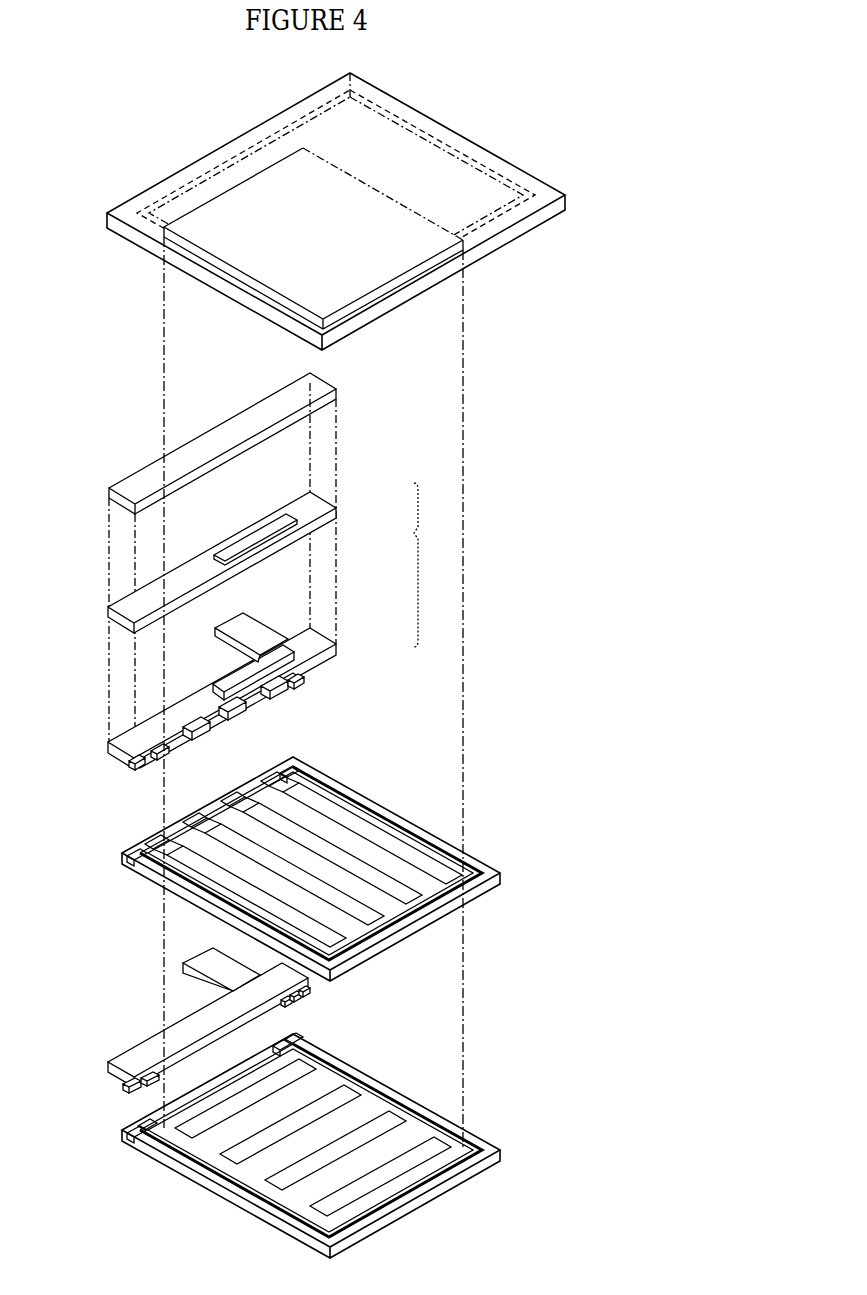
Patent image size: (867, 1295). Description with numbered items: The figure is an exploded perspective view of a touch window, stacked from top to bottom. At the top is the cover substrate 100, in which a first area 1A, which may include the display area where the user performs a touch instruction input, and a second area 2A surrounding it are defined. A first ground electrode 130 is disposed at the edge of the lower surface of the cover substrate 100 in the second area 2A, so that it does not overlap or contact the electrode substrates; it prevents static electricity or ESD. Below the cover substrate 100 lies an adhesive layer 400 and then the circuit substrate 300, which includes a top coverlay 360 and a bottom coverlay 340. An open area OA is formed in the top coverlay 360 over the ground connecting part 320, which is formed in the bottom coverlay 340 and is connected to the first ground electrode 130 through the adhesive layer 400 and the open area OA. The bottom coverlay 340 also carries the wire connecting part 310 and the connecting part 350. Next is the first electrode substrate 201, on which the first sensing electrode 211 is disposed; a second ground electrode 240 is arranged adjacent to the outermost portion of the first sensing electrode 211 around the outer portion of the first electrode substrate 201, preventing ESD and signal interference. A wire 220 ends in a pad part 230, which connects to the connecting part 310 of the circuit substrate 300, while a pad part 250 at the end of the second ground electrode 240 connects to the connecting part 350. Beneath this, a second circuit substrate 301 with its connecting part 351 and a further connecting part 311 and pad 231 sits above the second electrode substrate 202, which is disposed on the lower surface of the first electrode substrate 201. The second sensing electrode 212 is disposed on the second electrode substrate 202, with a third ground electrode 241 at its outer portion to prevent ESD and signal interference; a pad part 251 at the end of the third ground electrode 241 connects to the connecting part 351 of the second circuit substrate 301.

The cover substrate 100 is at (448, 138).
The first ground electrode 130 is at (216, 278).
The first area 1A is at (330, 246).
The second area 2A is at (420, 186).
The adhesive layer 400 is at (135, 486).
The circuit substrate 300 is at (283, 587).
The top coverlay 360 is at (260, 554).
The open area OA is at (252, 537).
The ground connecting part 320 is at (290, 640).
The bottom coverlay 340 is at (337, 644).
The connecting part 350 is at (302, 679).
The wire connecting part 310 is at (161, 752).
The first electrode substrate 201 is at (291, 843).
The second ground electrode 240 is at (360, 800).
The first sensing electrode 211 is at (403, 840).
The pad part 230 is at (270, 772).
The wire 220 is at (290, 768).
The pad part 250 is at (138, 856).
The second circuit substrate 301 is at (203, 960).
The connecting part 351 is at (138, 1089).
The terminal 311 is at (150, 1088).
The second electrode substrate 202 is at (302, 1124).
The third ground electrode 241 is at (422, 1110).
The second sensing electrode 212 is at (421, 1158).
The pads 231 is at (297, 1037).
The pad part 251 is at (123, 1133).